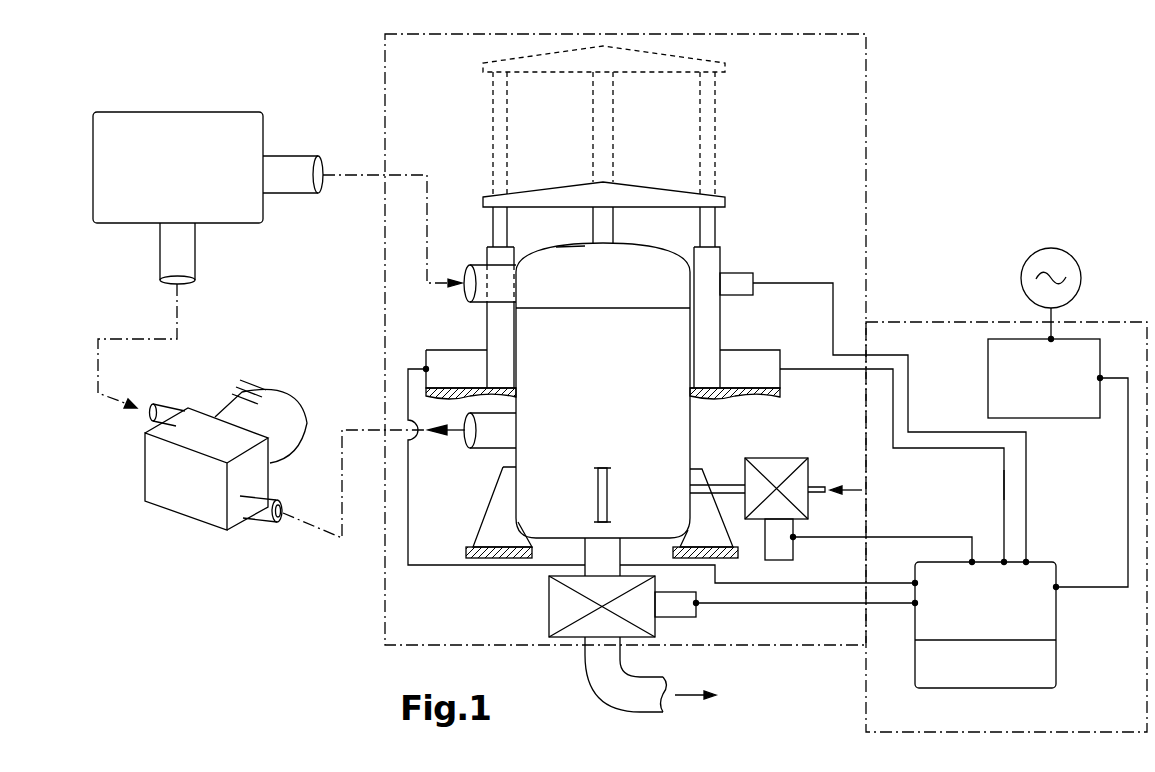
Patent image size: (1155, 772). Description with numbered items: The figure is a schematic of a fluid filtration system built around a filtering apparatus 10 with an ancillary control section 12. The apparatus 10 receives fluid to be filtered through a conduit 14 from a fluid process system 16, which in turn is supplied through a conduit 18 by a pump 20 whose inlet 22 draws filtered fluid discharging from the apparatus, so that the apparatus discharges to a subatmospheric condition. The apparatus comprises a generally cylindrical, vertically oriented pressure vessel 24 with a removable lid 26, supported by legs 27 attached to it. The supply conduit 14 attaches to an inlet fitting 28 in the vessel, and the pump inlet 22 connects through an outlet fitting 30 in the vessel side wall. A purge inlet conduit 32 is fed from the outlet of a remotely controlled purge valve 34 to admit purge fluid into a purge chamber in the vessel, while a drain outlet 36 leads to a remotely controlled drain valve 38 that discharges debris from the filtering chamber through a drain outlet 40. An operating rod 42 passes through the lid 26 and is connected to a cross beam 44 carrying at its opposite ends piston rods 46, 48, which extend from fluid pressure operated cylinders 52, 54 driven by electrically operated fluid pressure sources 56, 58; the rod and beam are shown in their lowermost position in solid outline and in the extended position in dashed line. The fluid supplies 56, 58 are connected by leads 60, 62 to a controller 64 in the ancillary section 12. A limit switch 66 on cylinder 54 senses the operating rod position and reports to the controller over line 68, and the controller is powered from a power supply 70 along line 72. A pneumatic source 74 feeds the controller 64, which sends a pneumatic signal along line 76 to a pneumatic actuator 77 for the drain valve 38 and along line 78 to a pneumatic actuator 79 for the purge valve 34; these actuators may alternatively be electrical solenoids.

The filtering apparatus 10 is at (384, 93).
The ancillary control section 12 is at (927, 320).
The conduit 14 is at (288, 166).
The fluid process system 16 is at (162, 112).
The conduit 18 is at (180, 250).
The pump 20 is at (170, 512).
The pump inlet 22 is at (262, 512).
The pressure vessel 24 is at (690, 416).
The removable lid 26 is at (628, 244).
The legs 27 is at (488, 512).
The inlet fitting 28 is at (470, 268).
The outlet fitting 30 is at (490, 449).
The purge inlet conduit 32 is at (730, 485).
The purge valve 34 is at (784, 458).
The drain outlet 36 is at (585, 555).
The drain valve 38 is at (549, 614).
The drain outlet 40 is at (623, 688).
The operating rod 42 is at (593, 226).
The cross beam 44 is at (634, 195).
The piston rod 46 is at (493, 226).
The piston rod 48 is at (715, 222).
The fluid pressure operated cylinder 52 is at (487, 322).
The fluid pressure operated cylinder 54 is at (722, 320).
The electrically operated fluid pressure source 56 is at (425, 352).
The electrically operated fluid pressure source 58 is at (780, 378).
The lead 60 is at (428, 566).
The lead 62 is at (1003, 483).
The controller 64 is at (1058, 616).
The limit switch 66 is at (740, 273).
The line 68 is at (908, 395).
The power supply 70 is at (1002, 339).
The line 72 is at (1128, 510).
The pneumatic source 74 is at (915, 660).
The line 76 is at (746, 604).
The pneumatic actuator 77 is at (676, 617).
The line 78 is at (914, 537).
The pneumatic actuator 79 is at (793, 552).